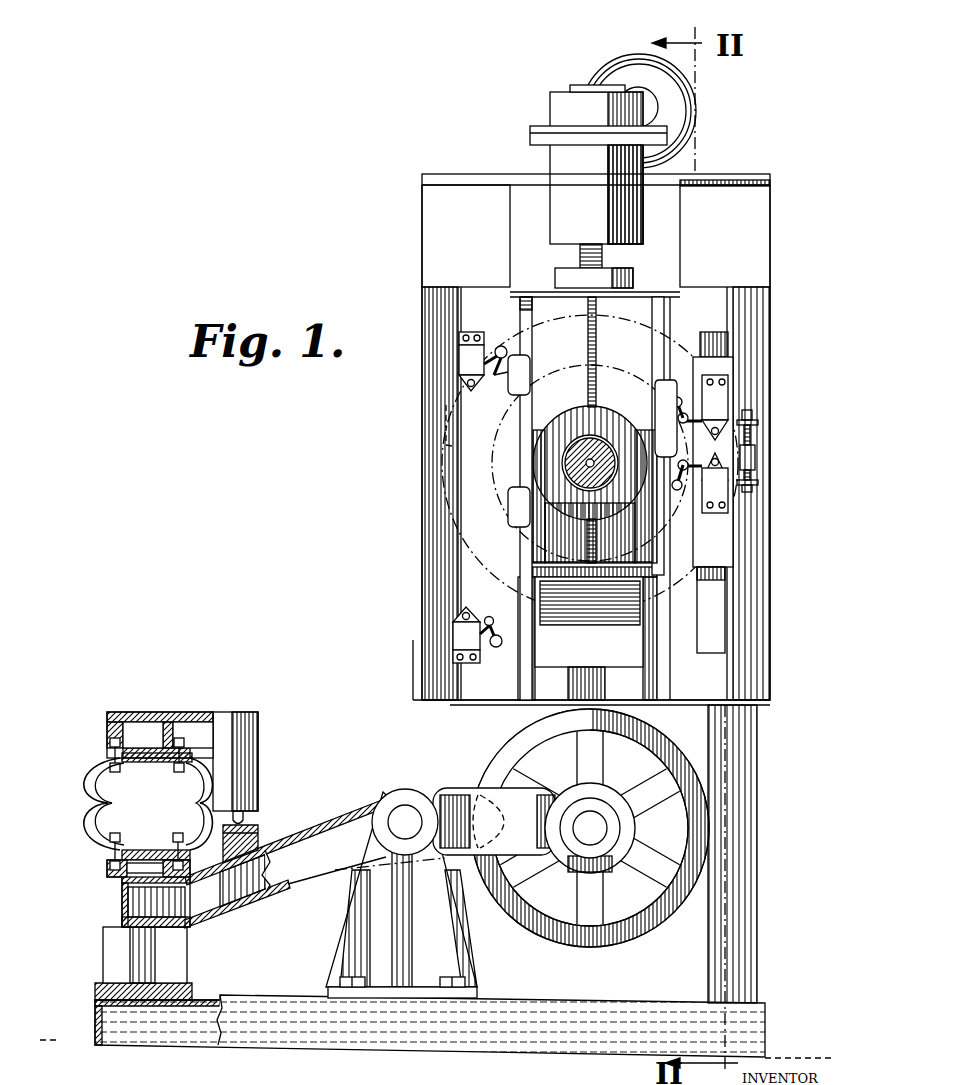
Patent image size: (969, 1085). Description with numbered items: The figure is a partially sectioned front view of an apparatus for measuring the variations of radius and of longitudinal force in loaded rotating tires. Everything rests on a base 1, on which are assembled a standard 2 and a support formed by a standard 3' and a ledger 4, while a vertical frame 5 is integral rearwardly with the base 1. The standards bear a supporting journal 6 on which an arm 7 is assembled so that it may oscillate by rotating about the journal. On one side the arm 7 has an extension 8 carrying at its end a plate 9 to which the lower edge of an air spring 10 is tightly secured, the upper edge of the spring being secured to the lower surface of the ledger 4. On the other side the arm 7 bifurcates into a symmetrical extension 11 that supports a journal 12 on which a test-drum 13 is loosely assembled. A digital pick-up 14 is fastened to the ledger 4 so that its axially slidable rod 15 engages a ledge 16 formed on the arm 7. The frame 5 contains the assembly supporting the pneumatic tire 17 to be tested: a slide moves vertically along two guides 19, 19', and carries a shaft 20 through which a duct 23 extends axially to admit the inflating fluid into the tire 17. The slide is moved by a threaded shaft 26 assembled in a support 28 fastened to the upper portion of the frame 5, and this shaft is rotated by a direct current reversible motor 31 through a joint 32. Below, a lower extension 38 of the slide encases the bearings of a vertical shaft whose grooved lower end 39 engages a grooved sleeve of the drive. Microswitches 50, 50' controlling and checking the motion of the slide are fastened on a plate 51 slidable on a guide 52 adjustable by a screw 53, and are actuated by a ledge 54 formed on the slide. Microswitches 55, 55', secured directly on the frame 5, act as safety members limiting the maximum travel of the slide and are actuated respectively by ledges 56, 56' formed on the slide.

The base 1 is at (272, 1032).
The standard 2 is at (365, 937).
The standard 3' is at (122, 955).
The ledger 4 is at (156, 712).
The vertical frame 5 is at (765, 318).
The supporting journal 6 is at (398, 818).
The arm 7 is at (322, 836).
The extension 8 is at (122, 901).
The plate 9 is at (107, 868).
The air spring 10 is at (92, 778).
The symmetrical extension 11 is at (458, 800).
The journal 12 is at (582, 833).
The test-drum 13 is at (702, 850).
The digital pick-up 14 is at (242, 751).
The rod 15 is at (244, 816).
The ledge 16 is at (252, 836).
The pneumatic tire 17 is at (446, 443).
The guide 19 is at (545, 498).
The guide 19' is at (636, 436).
The shaft 20 is at (583, 445).
The duct 23 is at (603, 447).
The threaded shaft 26 is at (580, 258).
The support 28 is at (552, 103).
The direct current reversible motor 31 is at (608, 62).
The joint 32 is at (662, 110).
The lower extension 38 is at (548, 650).
The lower end 39 is at (606, 683).
The microswitch 50 is at (738, 406).
The microswitch 50' is at (741, 483).
The plate 51 is at (718, 546).
The guide 52 is at (712, 605).
The screw 53 is at (757, 452).
The ledge 54 is at (665, 400).
The microswitch 55 is at (441, 361).
The microswitch 55' is at (435, 635).
The ledge 56 is at (500, 387).
The ledge 56' is at (499, 520).